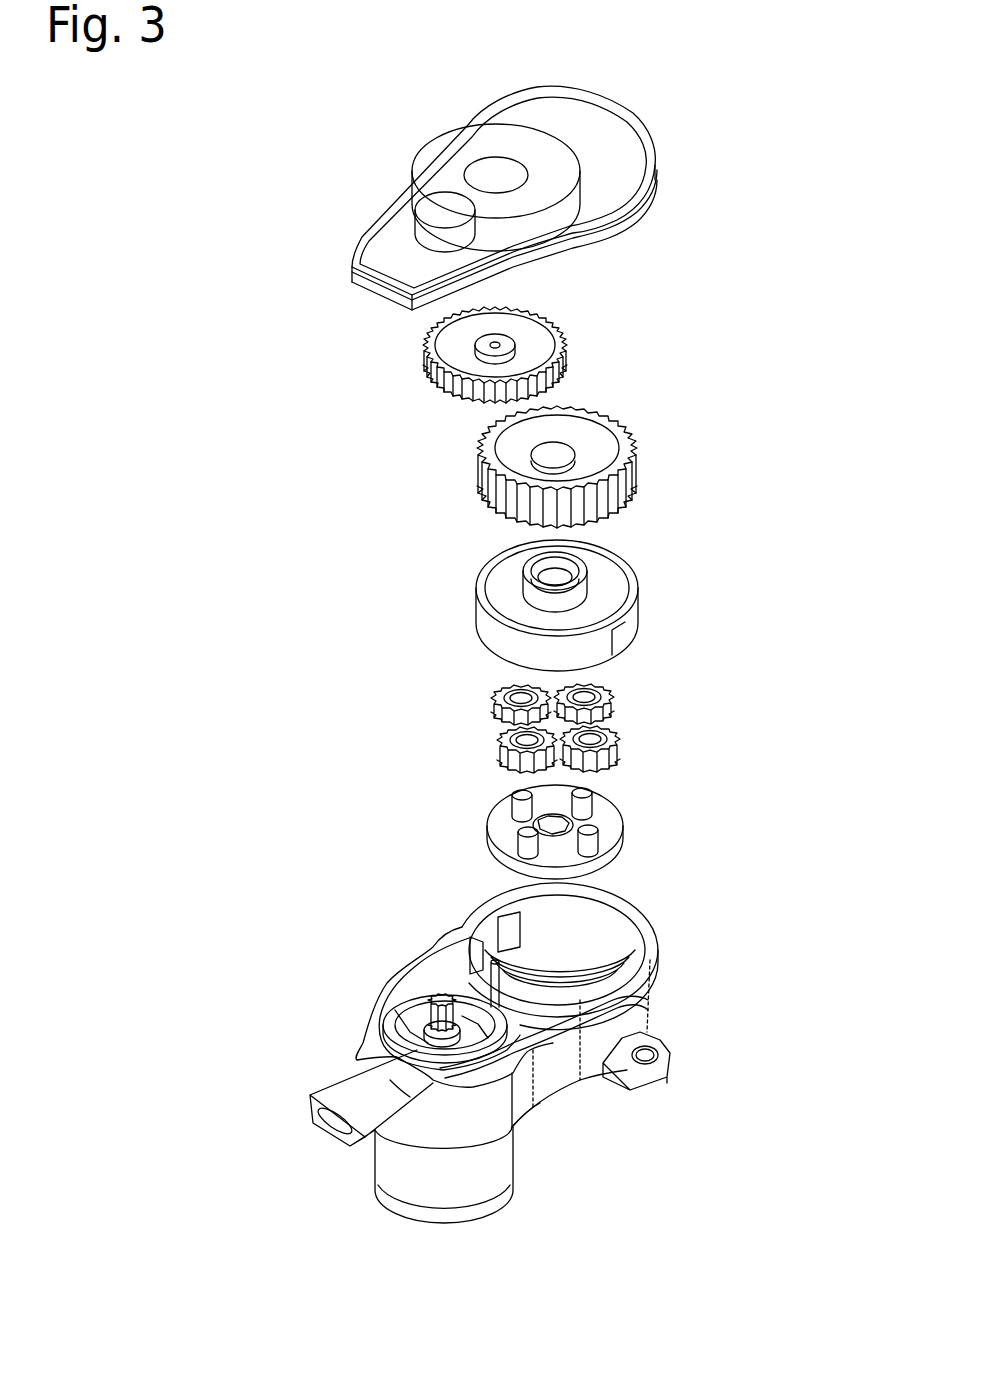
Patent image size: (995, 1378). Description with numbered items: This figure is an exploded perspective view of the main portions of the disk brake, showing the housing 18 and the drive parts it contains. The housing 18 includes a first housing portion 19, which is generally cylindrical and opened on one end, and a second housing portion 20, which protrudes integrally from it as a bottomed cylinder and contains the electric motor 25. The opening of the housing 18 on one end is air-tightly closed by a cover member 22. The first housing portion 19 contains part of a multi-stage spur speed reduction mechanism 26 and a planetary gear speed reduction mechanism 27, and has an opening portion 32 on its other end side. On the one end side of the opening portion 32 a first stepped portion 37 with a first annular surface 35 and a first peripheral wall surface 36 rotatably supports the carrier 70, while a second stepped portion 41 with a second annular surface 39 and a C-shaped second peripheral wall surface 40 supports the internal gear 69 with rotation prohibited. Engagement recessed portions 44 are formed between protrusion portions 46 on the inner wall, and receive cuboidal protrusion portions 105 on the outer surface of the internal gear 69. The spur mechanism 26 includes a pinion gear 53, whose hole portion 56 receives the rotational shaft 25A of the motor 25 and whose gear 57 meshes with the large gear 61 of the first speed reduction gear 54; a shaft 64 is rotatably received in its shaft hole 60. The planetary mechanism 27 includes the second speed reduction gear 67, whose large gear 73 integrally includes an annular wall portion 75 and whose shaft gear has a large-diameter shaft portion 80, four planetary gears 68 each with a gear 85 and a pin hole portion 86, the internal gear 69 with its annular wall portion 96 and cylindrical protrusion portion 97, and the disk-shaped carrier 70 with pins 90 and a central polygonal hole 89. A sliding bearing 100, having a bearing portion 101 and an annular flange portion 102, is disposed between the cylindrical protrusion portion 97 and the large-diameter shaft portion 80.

The housing 18 is at (505, 1054).
The first housing portion 19 is at (640, 1020).
The second housing portion 20 is at (498, 1200).
The cover member 22 is at (362, 302).
The electric motor 25 is at (414, 1113).
The rotational shaft 25A is at (360, 1064).
The multi-stage spur speed reduction mechanism 26 is at (632, 302).
The planetary gear speed reduction mechanism 27 is at (565, 713).
The opening portion 32 is at (578, 1133).
The first annular surface 35 is at (640, 972).
The first peripheral wall surface 36 is at (620, 958).
The first stepped portion 37 is at (623, 968).
The second annular surface 39 is at (600, 942).
The second peripheral wall surface 40 is at (595, 905).
The second stepped portion 41 is at (612, 942).
The engagement recessed portion 44 is at (478, 925).
The protrusion portion 46 is at (520, 922).
The pinion gear 53 is at (399, 999).
The first speed reduction gear 54 is at (540, 322).
The hole portion 56 is at (420, 1000).
The gear 57 is at (410, 1012).
The shaft hole 60 is at (500, 342).
The large gear 61 is at (568, 348).
The shaft 64 is at (432, 975).
The second speed reduction gear 67 is at (574, 435).
The planetary gear 68 is at (556, 714).
The internal gear 69 is at (580, 583).
The carrier 70 is at (596, 825).
The large gear 73 is at (625, 455).
The annular wall portion 75 is at (506, 456).
The large-diameter shaft portion 80 is at (562, 452).
The gear 85 is at (500, 690).
The pin hole portion 86 is at (611, 694).
The polygonal hole 89 is at (510, 825).
The pin 90 is at (515, 800).
The annular wall portion 96 is at (610, 590).
The cylindrical protrusion portion 97 is at (510, 600).
The sliding bearing 100 is at (592, 566).
The bearing portion 101 is at (560, 556).
The annular flange portion 102 is at (548, 558).
The protrusion portion 105 is at (520, 566).